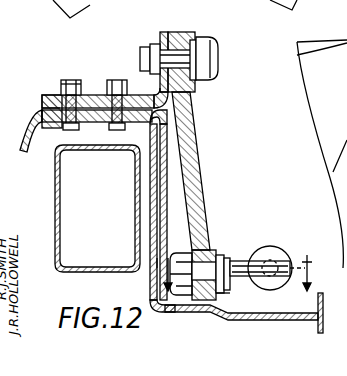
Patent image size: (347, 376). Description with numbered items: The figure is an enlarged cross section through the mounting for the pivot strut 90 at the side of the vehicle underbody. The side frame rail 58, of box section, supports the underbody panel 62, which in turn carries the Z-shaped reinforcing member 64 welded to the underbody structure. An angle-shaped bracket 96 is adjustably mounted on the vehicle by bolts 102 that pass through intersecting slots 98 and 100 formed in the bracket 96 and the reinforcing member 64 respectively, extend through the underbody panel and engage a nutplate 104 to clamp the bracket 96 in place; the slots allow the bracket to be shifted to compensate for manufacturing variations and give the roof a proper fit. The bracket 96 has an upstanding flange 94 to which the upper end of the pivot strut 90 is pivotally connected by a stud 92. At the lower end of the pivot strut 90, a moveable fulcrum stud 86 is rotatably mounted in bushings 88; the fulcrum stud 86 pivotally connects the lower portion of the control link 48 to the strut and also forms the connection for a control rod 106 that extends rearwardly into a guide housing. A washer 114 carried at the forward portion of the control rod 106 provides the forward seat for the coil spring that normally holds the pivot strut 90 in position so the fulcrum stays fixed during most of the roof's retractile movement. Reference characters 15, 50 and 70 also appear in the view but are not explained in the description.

The section line 15- 15 is at (238, 262).
The control link 48 is at (228, 250).
The sheet metal panel 50 is at (30, 129).
The side frame rail 58 is at (62, 197).
The underbody panel 62 is at (162, 258).
The reinforcing member 64 is at (168, 128).
The flange 70 is at (324, 298).
The moveable fulcrum stud 86 is at (241, 308).
The bushings 88 is at (165, 300).
The pivot strut 90 is at (191, 195).
The stud 92 is at (190, 52).
The upstanding flange 94 is at (163, 33).
The angle-shaped bracket 96 is at (95, 95).
The slot 98 is at (62, 95).
The slot 100 is at (60, 106).
The bolts 102 is at (72, 80).
The nutplate 104 is at (52, 128).
The control rod 106 is at (258, 290).
The washer 114 is at (271, 246).